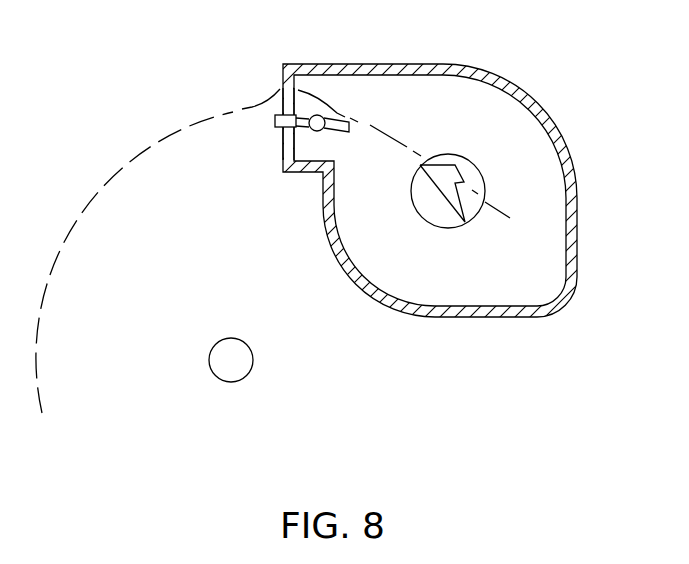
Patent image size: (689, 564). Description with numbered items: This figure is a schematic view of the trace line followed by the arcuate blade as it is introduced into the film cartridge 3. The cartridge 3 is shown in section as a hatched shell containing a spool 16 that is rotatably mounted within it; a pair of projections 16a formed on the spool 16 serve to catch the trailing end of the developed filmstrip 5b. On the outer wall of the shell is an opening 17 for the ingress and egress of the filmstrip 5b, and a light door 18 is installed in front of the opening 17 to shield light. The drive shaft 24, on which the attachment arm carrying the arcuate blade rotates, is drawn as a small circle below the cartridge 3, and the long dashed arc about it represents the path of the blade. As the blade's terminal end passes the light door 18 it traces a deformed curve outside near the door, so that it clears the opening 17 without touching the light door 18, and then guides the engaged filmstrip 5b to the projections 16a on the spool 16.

The film cartridge 3 is at (496, 67).
The developed filmstrip 5b is at (378, 128).
The spool 16 is at (530, 216).
The projections 16a is at (458, 172).
The opening 17 is at (281, 104).
The light door 18 is at (283, 126).
The drive shaft 24 is at (227, 382).